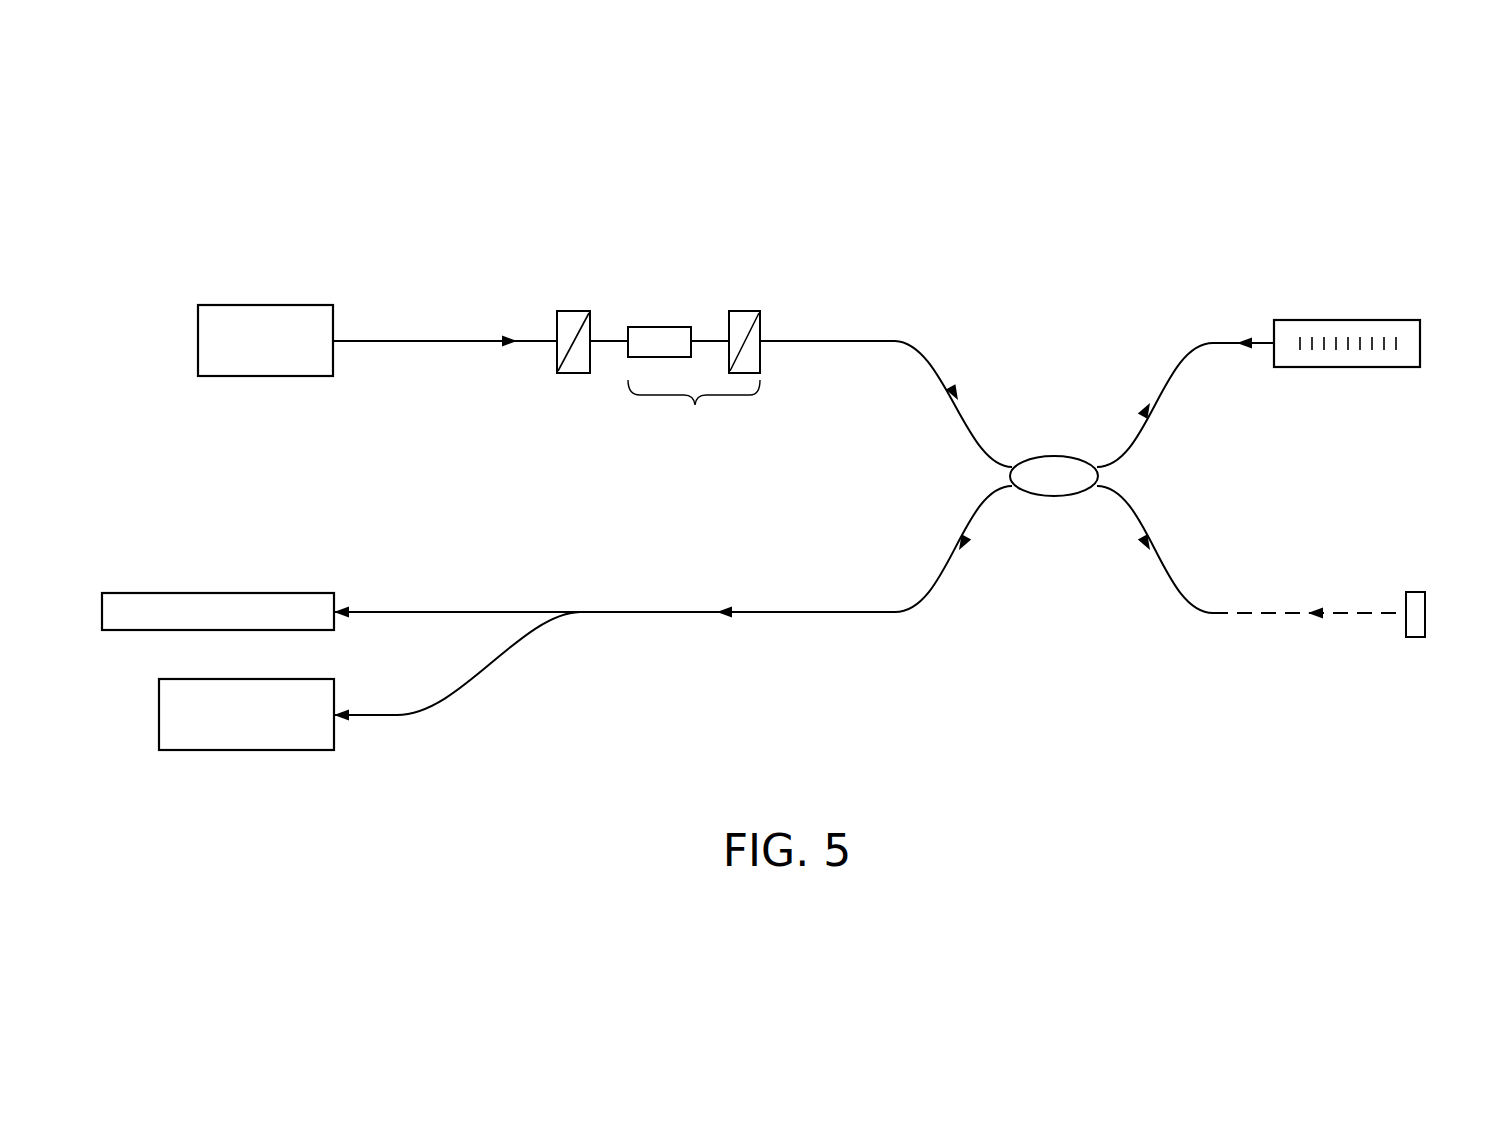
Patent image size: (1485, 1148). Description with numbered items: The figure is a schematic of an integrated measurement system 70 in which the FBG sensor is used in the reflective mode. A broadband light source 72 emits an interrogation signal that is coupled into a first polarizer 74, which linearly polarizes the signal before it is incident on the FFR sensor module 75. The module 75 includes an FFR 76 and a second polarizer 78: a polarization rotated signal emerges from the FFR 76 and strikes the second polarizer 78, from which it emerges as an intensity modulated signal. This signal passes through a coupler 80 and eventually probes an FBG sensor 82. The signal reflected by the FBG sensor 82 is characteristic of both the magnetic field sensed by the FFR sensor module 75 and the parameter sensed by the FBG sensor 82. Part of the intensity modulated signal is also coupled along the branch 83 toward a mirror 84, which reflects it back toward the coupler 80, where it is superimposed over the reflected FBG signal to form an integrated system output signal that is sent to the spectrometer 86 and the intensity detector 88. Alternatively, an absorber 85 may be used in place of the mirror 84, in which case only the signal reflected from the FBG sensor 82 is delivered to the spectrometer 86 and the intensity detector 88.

The measurement system 70 is at (1360, 164).
The broadband light source 72 is at (266, 305).
The first polarizer 74 is at (572, 311).
The FFR sensor module 75 is at (694, 408).
The FFR 76 is at (659, 327).
The second polarizer 78 is at (744, 311).
The coupler 80 is at (1054, 457).
The FBG sensor 82 is at (1346, 320).
The optical path 83 is at (1347, 613).
The mirror 84 is at (1416, 637).
The absorber 85 is at (1415, 614).
The spectrometer 86 is at (218, 593).
The intensity detector 88 is at (247, 750).